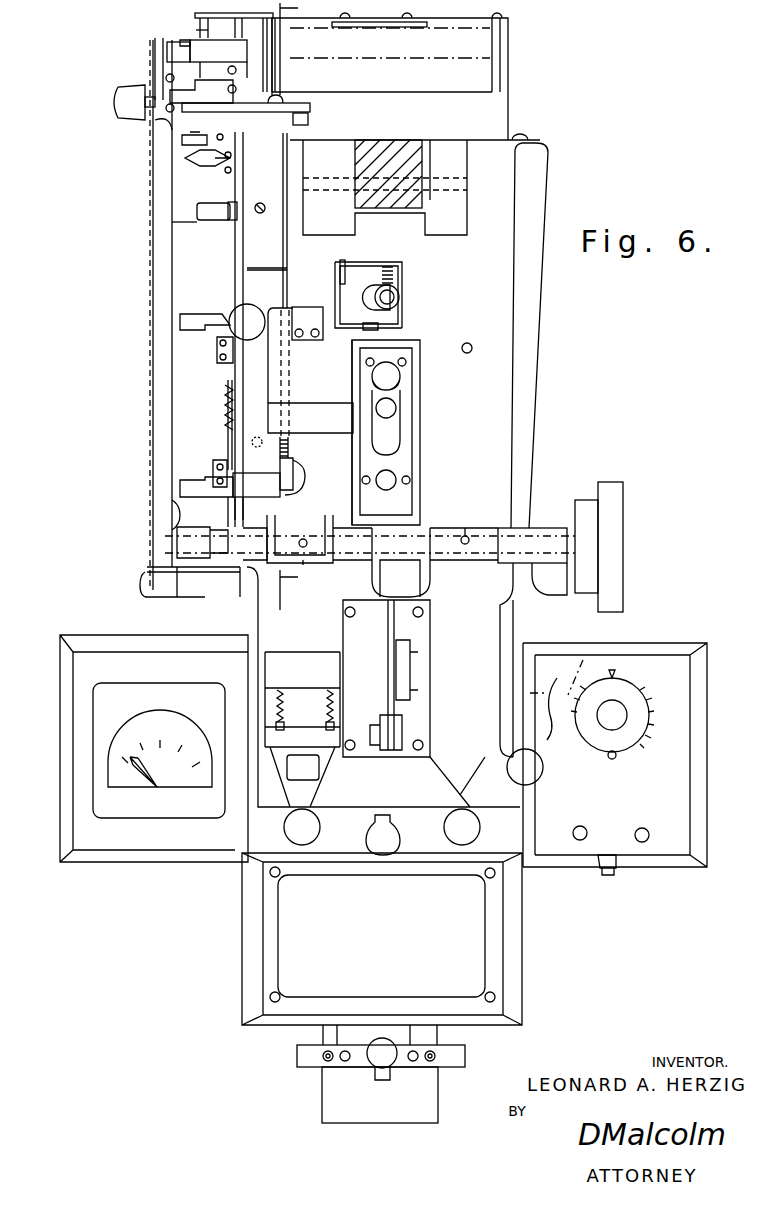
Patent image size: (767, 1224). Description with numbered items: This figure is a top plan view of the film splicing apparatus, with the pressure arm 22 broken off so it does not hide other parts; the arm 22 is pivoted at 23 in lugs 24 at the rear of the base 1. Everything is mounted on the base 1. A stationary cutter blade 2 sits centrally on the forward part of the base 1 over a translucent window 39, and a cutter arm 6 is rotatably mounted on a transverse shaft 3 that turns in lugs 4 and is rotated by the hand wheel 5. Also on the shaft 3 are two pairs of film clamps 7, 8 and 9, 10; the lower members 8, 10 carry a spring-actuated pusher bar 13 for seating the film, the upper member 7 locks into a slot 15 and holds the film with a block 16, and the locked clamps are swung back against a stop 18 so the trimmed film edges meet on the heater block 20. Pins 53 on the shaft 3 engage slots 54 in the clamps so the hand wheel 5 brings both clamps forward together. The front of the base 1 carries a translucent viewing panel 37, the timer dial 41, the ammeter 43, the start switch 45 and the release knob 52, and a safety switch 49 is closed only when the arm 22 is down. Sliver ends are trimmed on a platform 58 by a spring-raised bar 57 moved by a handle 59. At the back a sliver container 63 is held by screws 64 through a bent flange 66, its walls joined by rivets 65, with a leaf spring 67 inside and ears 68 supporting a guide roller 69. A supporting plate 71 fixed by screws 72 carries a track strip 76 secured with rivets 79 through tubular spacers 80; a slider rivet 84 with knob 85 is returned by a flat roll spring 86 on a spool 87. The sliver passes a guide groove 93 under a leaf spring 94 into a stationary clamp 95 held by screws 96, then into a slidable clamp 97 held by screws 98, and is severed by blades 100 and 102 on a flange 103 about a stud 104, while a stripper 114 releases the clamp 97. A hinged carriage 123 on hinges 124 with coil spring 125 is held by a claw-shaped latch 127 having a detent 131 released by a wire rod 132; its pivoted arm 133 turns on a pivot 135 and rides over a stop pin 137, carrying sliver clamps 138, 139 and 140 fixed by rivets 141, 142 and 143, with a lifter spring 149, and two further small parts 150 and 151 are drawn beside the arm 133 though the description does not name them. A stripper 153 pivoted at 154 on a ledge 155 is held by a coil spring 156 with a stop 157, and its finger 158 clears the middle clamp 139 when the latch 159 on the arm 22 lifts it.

The base 1 is at (537, 425).
The stationary cutter blade 2 is at (386, 670).
The transverse shaft 3 is at (440, 528).
The lugs 4 is at (540, 528).
The hand wheel 5 is at (615, 525).
The cutter arm 6 is at (388, 570).
The upper film clamp member 7 is at (513, 612).
The lower film clamp member 8 is at (490, 795).
The upper film clamp member 9 is at (258, 384).
The lower film clamp member 10 is at (270, 622).
The spring-actuated pusher bar 13 is at (305, 690).
The slot 15 is at (430, 780).
The block 16 is at (300, 410).
The stop 18 is at (470, 343).
The heater block 20 is at (400, 414).
The pressure arm 22 is at (358, 160).
The pivot 23 is at (467, 180).
The lugs 24 is at (305, 195).
The translucent viewing panel 37 is at (465, 948).
The translucent window 39 is at (412, 455).
The timer dial 41 is at (640, 738).
The ammeter 43 is at (120, 758).
The start switch 45 is at (618, 870).
The safety switch 49 is at (398, 290).
The pressure arm release knob 52 is at (383, 855).
The pins 53 is at (306, 538).
The slots 54 is at (467, 527).
The depressible bar 57 is at (297, 1058).
The platform 58 is at (383, 1110).
The handle 59 is at (375, 1058).
The dispenser container 63 is at (508, 22).
The screws 64 is at (276, 40).
The rivets 65 is at (500, 45).
The bent flange 66 is at (405, 98).
The leaf spring 67 is at (414, 28).
The ears 68 is at (203, 16).
The guide roller 69 is at (196, 28).
The supporting plate 71 is at (270, 255).
The screws 72 is at (260, 213).
The sheet metal strip 76 is at (153, 380).
The rivets 79 is at (270, 58).
The tubular spacers 80 is at (155, 42).
The rivet 84 is at (147, 107).
The actuating knob 85 is at (118, 100).
The flat roll spring 86 is at (205, 22).
The spool 87 is at (240, 22).
The guide groove 93 is at (167, 52).
The leaf spring 94 is at (180, 42).
The stationary sliver clamp 95 is at (190, 103).
The screws 96 is at (236, 70).
The slidable sliver clamp 97 is at (200, 72).
The screws 98 is at (166, 78).
The stationary cutting blade 100 is at (232, 112).
The movable blade 102 is at (236, 88).
The flange 103 is at (310, 123).
The stud 104 is at (285, 102).
The stripper 114 is at (172, 508).
The hinged sliver carriage 123 is at (228, 415).
The hinges 124 is at (296, 475).
The coil spring 125 is at (292, 450).
The claw-shaped latch 127 is at (240, 478).
The detent 131 is at (285, 495).
The wire rod 132 is at (230, 505).
The pivoted arm 133 is at (235, 262).
The pivot 135 is at (235, 310).
The stop pin 137 is at (175, 160).
The sliver clamp 138 is at (185, 145).
The sliver clamp 139 is at (180, 328).
The sliver clamp 140 is at (180, 480).
The rivets 141 is at (225, 170).
The rivets 142 is at (220, 345).
The rivets 143 is at (218, 465).
The coil spring 149 is at (225, 396).
The pin 150 is at (172, 222).
The cylinder 151 is at (228, 215).
The stripper 153 is at (402, 308).
The pivot 154 is at (385, 262).
The ledge 155 is at (287, 275).
The coil spring 156 is at (395, 268).
The stop 157 is at (358, 288).
The finger 158 is at (380, 330).
The latch 159 is at (340, 278).